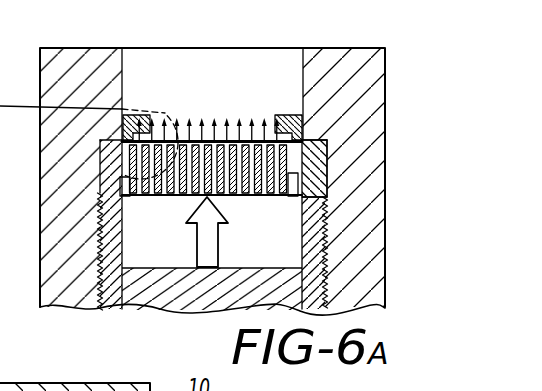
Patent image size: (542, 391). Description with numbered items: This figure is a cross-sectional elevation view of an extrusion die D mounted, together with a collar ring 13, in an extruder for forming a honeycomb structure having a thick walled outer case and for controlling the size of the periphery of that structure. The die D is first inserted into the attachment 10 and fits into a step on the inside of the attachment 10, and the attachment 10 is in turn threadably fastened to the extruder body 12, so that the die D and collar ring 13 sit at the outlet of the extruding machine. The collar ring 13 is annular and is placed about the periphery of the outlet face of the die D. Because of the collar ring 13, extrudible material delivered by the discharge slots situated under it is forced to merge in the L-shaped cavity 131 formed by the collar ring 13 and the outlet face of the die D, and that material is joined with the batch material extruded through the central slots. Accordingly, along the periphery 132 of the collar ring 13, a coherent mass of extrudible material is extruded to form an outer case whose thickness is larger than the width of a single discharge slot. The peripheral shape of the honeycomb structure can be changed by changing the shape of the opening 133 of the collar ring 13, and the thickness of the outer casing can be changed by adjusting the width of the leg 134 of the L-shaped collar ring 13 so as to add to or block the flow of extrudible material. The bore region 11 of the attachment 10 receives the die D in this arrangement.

The attachment 10 is at (356, 48).
The threaded bore 11 is at (330, 137).
The extruder body 12 is at (313, 243).
The collar ring 13 is at (278, 117).
The L-shaped cavity 131 is at (270, 125).
The periphery of collar ring 132 is at (268, 130).
The opening of collar ring 133 is at (195, 118).
The leg of L-shaped collar ring 134 is at (318, 122).
The die D is at (317, 167).